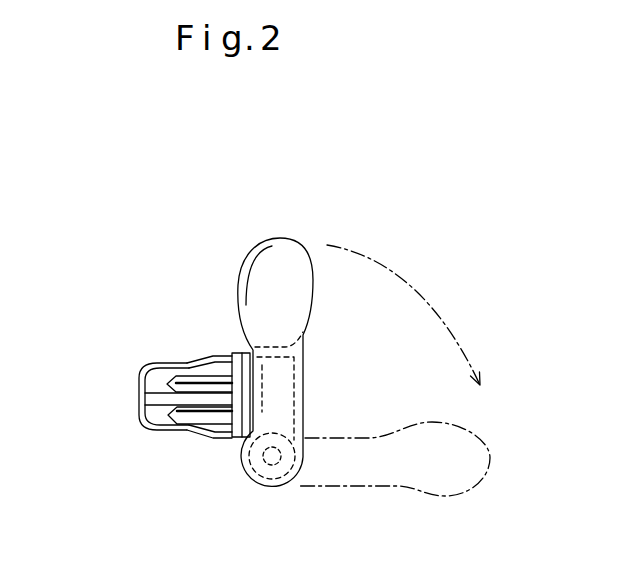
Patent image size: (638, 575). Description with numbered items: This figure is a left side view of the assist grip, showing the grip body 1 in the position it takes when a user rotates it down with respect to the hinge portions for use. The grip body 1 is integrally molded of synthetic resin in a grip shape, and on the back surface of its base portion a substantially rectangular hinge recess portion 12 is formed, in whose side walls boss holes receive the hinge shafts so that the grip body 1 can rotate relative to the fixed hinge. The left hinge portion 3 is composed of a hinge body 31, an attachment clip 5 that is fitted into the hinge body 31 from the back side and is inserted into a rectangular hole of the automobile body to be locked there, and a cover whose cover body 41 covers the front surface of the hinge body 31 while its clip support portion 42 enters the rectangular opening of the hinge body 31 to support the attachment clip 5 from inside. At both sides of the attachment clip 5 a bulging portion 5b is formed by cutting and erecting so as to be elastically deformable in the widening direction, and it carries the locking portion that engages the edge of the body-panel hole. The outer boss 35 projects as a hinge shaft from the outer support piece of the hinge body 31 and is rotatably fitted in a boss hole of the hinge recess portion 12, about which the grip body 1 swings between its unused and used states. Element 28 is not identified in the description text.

The grip body 1 is at (279, 238).
The left hinge portion 3 is at (157, 387).
The attachment clip 5 is at (139, 398).
The bulging portion 5b is at (208, 354).
The hinge recess portion 12 is at (303, 332).
The upper elastic engaging piece 28 is at (168, 397).
The hinge body 31 is at (237, 430).
The outer boss 35 is at (270, 480).
The cover body 41 is at (296, 361).
The clip support portion 42 is at (193, 418).